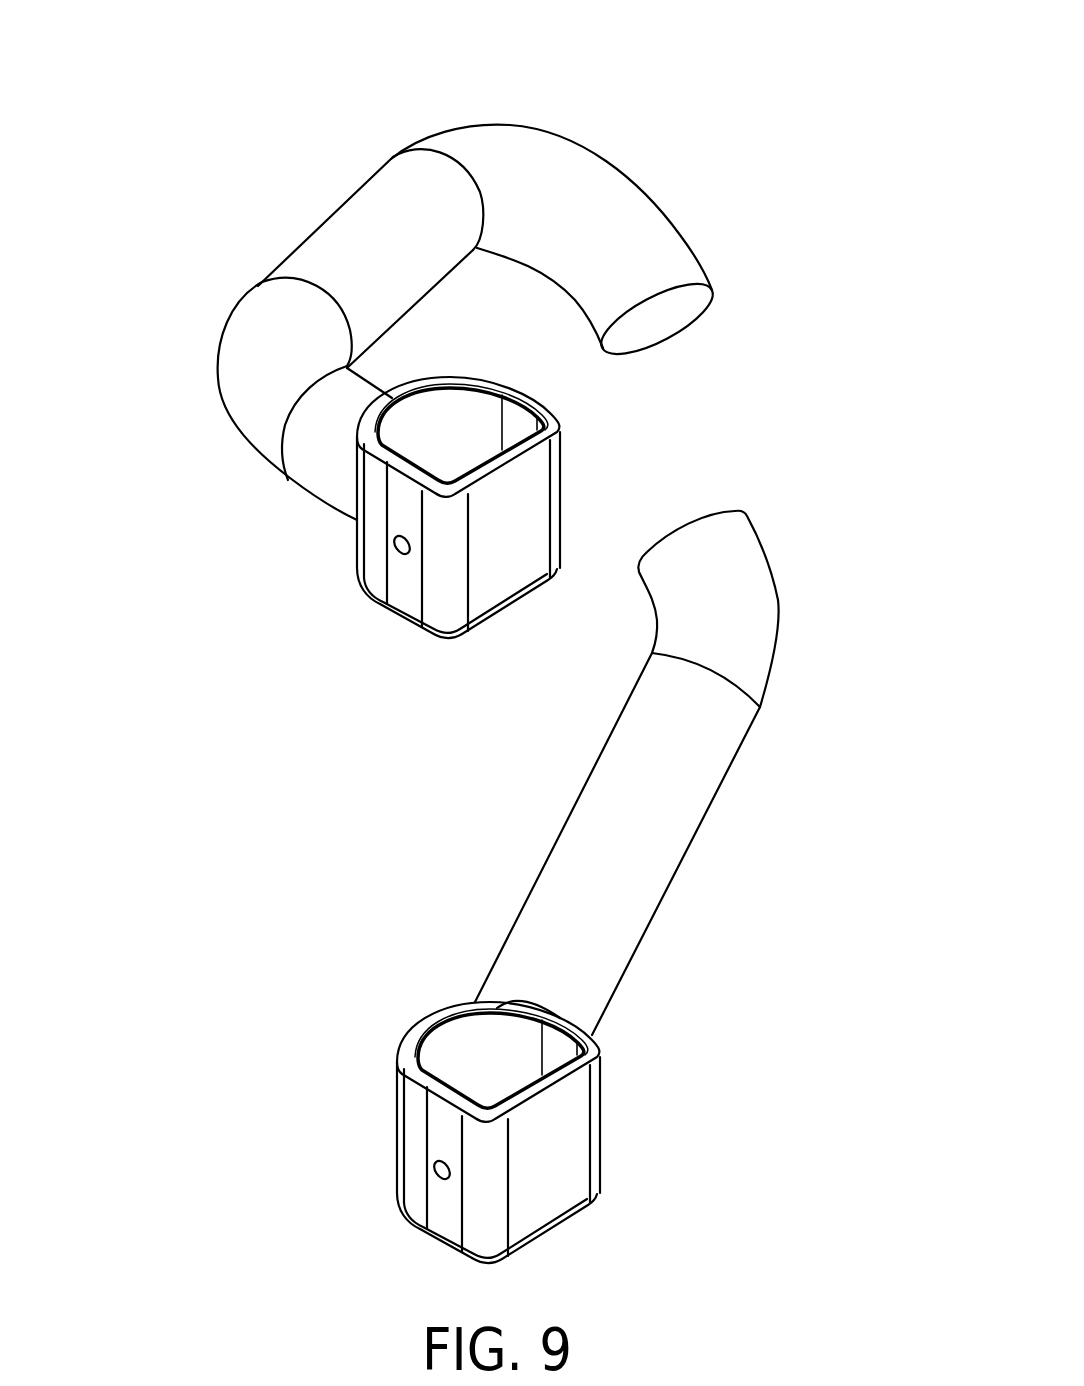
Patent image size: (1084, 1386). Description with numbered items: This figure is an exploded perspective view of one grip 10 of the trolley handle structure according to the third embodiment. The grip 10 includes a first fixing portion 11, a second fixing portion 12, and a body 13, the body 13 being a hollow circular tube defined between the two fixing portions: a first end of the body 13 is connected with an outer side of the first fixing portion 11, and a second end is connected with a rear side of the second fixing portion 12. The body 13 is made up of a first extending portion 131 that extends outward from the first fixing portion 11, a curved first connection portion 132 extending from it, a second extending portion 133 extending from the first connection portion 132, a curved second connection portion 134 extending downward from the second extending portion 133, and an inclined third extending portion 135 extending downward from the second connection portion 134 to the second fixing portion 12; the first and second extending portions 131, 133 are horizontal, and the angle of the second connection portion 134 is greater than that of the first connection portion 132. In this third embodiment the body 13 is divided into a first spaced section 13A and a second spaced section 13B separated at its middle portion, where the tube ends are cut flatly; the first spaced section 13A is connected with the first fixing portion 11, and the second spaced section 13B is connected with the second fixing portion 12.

The grip 10 is at (758, 197).
The first fixing portion 11 is at (410, 587).
The second fixing portion 12 is at (437, 1205).
The body 13 is at (773, 575).
The first spaced section 13A is at (308, 235).
The second spaced section 13B is at (727, 777).
The first extending portion 131 is at (321, 458).
The first connection portion 132 is at (270, 352).
The second extending portion 133 is at (383, 207).
The second connection portion 134 is at (593, 200).
The third extending portion 135 is at (630, 870).